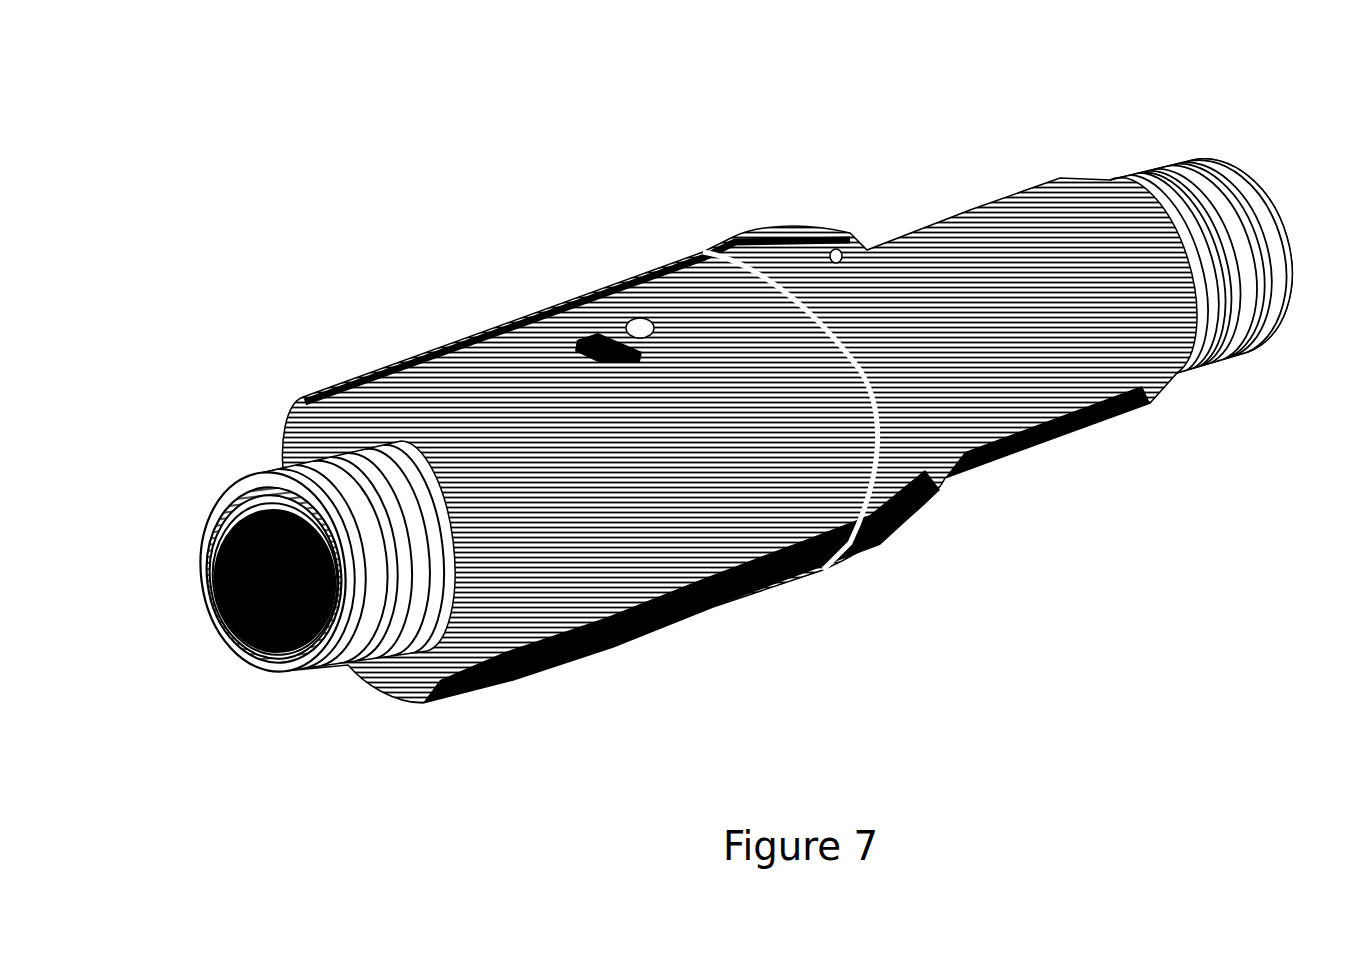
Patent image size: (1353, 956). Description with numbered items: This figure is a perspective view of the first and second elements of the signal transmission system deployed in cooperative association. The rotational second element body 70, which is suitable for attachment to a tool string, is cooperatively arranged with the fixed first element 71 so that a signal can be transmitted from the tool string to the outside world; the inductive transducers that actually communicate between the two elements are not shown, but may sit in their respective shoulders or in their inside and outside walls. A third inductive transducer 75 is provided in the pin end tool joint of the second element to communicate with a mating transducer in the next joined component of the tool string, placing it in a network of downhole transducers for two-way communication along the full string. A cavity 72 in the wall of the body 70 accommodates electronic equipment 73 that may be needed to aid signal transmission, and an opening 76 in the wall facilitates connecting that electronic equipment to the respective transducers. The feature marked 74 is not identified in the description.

The rotational second element body 70 is at (556, 309).
The fixed first element 71 is at (755, 233).
The cavity 72 is at (505, 320).
The electronic equipment 73 is at (607, 335).
The port 74 is at (834, 250).
The third inductive transducer 75 is at (295, 508).
The opening 76 is at (646, 328).